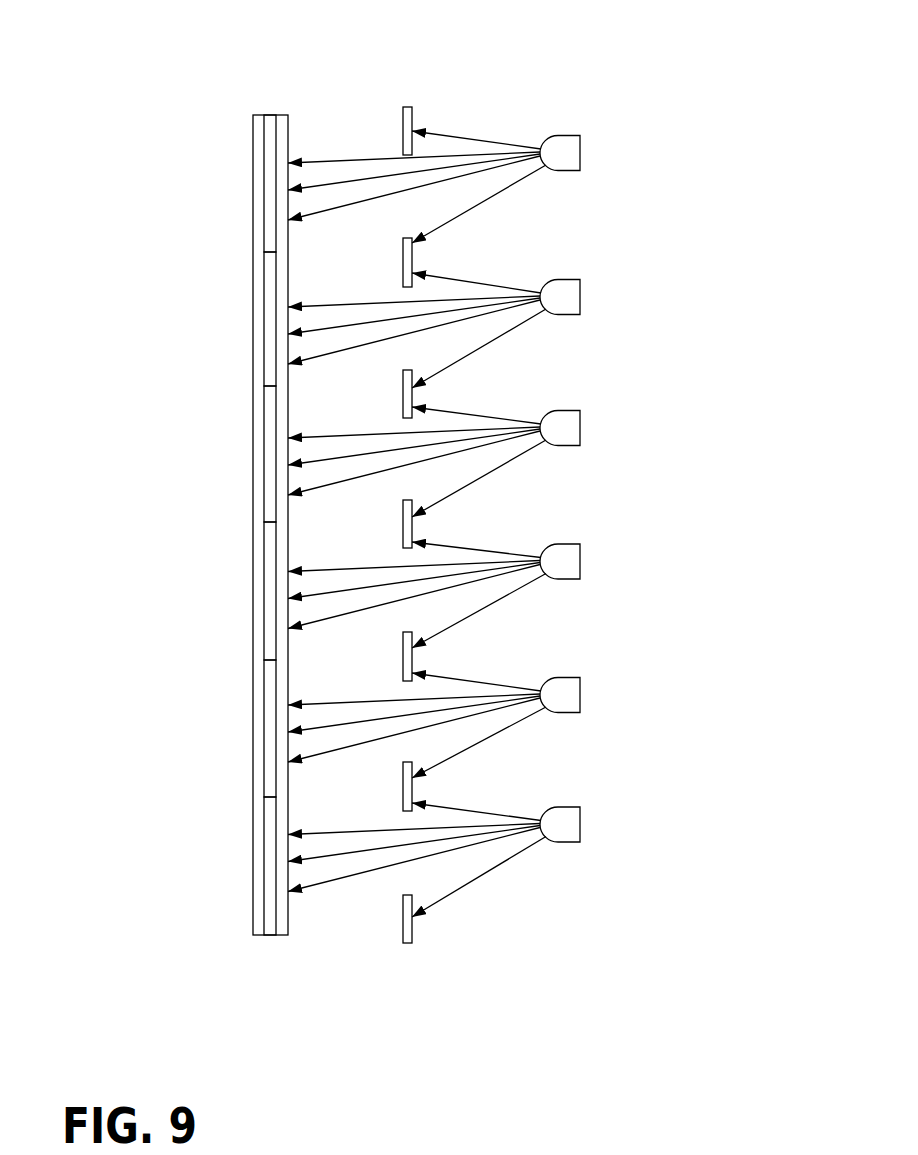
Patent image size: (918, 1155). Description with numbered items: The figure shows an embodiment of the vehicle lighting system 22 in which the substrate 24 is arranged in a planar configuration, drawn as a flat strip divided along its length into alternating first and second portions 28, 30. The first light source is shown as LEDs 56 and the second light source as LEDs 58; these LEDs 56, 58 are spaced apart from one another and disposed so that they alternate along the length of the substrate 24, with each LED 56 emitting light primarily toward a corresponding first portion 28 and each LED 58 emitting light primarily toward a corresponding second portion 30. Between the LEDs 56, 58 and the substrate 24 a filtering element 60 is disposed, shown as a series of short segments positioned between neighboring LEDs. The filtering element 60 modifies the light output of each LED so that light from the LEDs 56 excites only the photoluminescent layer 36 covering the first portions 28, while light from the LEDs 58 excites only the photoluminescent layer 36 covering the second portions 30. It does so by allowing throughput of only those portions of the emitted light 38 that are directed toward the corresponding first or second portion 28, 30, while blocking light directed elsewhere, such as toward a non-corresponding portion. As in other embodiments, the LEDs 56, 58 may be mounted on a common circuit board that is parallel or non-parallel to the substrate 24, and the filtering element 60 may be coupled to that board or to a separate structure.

The vehicle lighting system 22 is at (712, 92).
The substrate 24 is at (147, 380).
The first portion 28 is at (270, 176).
The second portion 30 is at (270, 294).
The photoluminescent layer 36 is at (285, 128).
The light 38 is at (770, 503).
The LEDs 56 is at (577, 159).
The LEDs 58 is at (577, 303).
The filtering element 60 is at (405, 107).